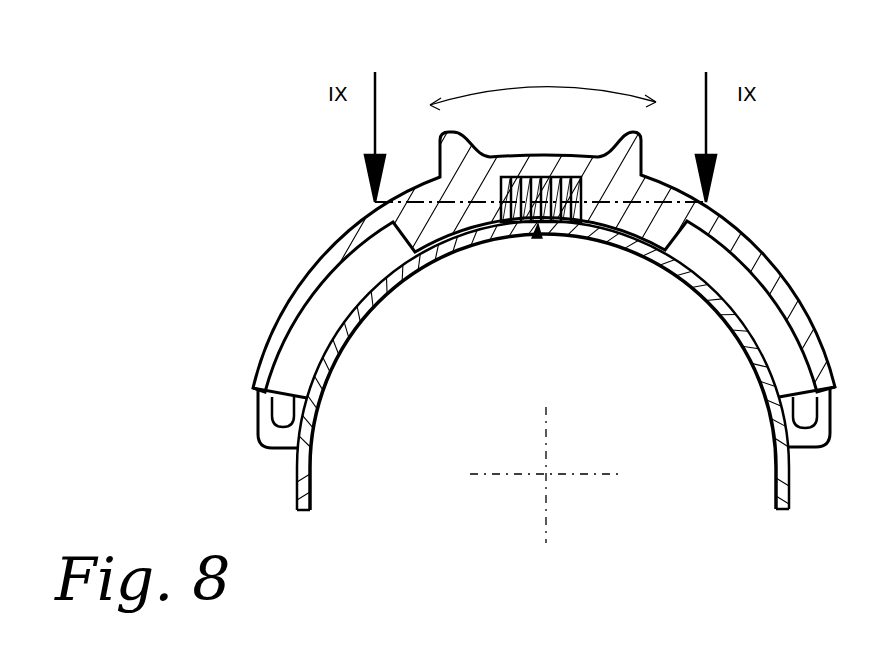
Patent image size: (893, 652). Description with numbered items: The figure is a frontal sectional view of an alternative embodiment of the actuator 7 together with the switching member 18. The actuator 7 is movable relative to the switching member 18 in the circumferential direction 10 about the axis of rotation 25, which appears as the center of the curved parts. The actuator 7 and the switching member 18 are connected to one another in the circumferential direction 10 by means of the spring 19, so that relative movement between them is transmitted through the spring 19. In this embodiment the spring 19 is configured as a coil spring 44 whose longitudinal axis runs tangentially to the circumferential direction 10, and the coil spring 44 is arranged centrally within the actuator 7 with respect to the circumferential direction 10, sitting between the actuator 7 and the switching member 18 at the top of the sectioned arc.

The actuator 7 is at (322, 262).
The circumferential direction 10 is at (545, 88).
The switching member 18 is at (348, 333).
The spring 19 is at (537, 238).
The coil spring 44 is at (563, 226).
The axis of rotation 25 is at (547, 474).